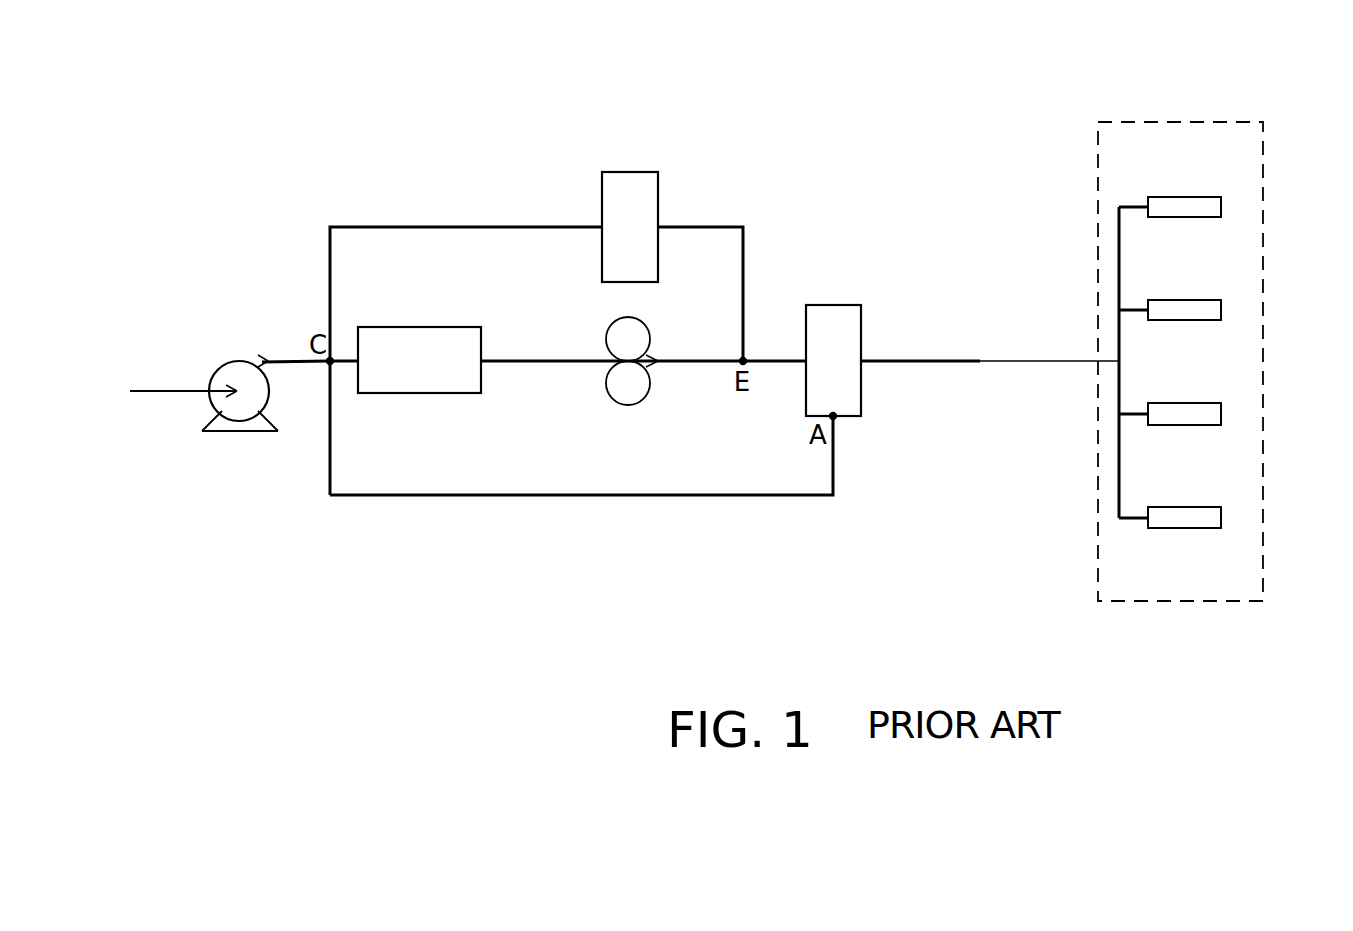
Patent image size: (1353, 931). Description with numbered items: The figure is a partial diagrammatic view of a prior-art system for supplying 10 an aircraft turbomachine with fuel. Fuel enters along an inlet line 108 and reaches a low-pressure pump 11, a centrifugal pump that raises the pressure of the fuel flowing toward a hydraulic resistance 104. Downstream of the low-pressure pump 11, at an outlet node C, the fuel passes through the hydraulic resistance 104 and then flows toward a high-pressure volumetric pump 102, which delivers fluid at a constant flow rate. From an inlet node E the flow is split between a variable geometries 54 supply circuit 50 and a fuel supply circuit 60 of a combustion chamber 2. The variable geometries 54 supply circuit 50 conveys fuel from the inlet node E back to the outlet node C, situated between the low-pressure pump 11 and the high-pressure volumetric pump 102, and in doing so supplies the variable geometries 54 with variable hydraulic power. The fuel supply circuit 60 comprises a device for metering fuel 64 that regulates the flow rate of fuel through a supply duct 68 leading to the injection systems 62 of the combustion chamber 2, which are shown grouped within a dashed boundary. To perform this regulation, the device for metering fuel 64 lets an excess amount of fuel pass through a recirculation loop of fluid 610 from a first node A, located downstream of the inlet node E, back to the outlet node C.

The system for supplying 10 is at (836, 111).
The low-pressure pump 11 is at (243, 373).
The inlet line 108 is at (183, 392).
The hydraulic resistance 104 is at (433, 381).
The high-pressure volumetric pump 102 is at (630, 390).
The variable geometries supply circuit 50 is at (745, 258).
The variable geometries 54 is at (630, 190).
The device for metering fuel 64 is at (843, 405).
The recirculation loop of fluid 610 is at (728, 498).
The fuel supply circuit 60 is at (909, 357).
The supply duct 68 is at (1043, 363).
The injection systems 62 is at (1186, 210).
The combustion chamber 2 is at (1263, 547).